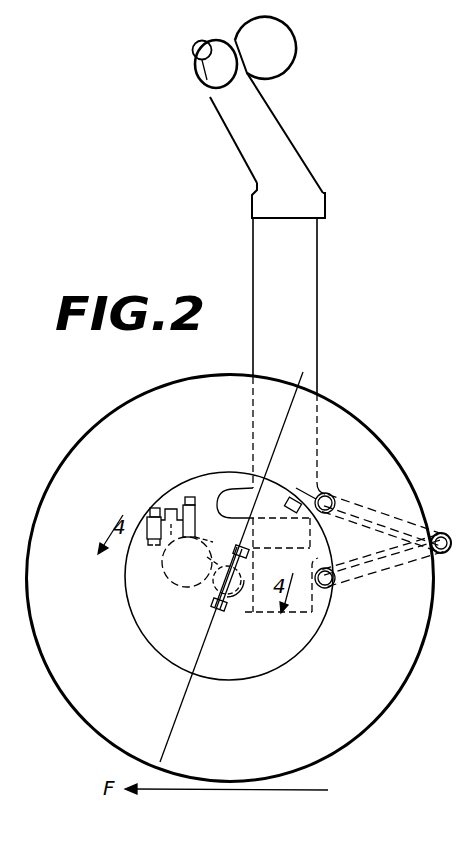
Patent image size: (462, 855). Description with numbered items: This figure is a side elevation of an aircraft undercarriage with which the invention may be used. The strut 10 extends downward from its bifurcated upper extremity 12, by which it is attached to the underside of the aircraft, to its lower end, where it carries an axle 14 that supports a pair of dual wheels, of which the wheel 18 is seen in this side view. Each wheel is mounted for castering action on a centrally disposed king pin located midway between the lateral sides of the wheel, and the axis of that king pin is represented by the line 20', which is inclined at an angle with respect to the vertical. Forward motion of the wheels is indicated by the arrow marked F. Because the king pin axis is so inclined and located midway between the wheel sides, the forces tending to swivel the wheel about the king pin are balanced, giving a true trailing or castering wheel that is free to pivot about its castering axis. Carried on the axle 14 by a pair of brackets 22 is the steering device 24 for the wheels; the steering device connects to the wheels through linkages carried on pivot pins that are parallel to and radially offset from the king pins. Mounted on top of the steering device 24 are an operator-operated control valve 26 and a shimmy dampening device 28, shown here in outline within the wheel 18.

The strut 10 is at (320, 272).
The upper extremity 12 is at (277, 118).
The axle 14 is at (237, 605).
The wheel 18 is at (343, 423).
The king pin axis line 20' is at (231, 567).
The brackets 22 is at (205, 592).
The steering device 24 is at (175, 563).
The operator-operated control valve 26 is at (142, 515).
The shimmy dampening device 28 is at (198, 500).